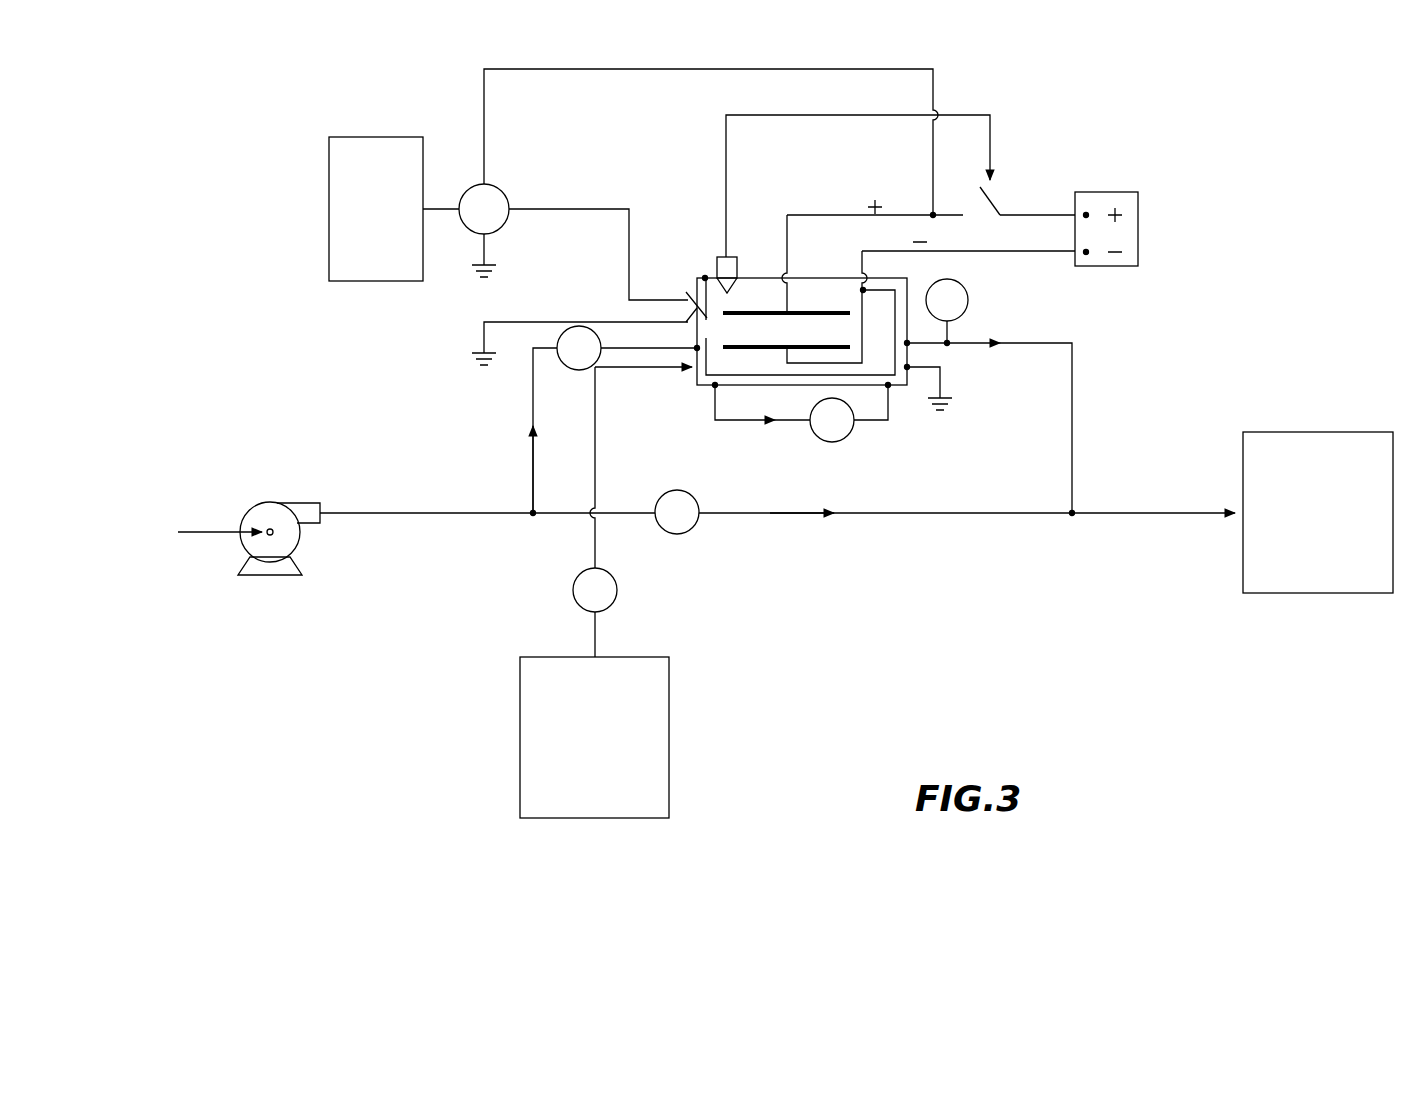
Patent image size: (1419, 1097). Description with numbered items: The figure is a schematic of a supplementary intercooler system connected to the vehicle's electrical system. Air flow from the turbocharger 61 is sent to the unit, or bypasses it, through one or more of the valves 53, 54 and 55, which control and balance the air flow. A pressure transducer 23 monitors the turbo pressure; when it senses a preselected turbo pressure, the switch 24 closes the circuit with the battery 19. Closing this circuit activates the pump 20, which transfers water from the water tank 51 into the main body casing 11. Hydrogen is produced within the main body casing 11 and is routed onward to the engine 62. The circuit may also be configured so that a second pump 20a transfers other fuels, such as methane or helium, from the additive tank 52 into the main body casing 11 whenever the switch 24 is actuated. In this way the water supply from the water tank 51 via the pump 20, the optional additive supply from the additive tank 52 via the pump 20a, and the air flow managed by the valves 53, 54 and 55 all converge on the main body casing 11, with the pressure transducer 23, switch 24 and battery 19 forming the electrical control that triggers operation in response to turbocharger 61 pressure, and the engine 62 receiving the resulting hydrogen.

The main body casing 11 is at (762, 270).
The battery 19 is at (1138, 220).
The pump 20 is at (504, 188).
The pump 20a is at (617, 585).
The pressure transducer 23 is at (722, 268).
The switch 24 is at (1004, 197).
The water tank 51 is at (328, 159).
The additive tank 52 is at (669, 722).
The valve 53 is at (566, 330).
The valve 54 is at (850, 438).
The valve 55 is at (692, 530).
The turbocharger 61 is at (298, 543).
The engine 62 is at (1347, 593).